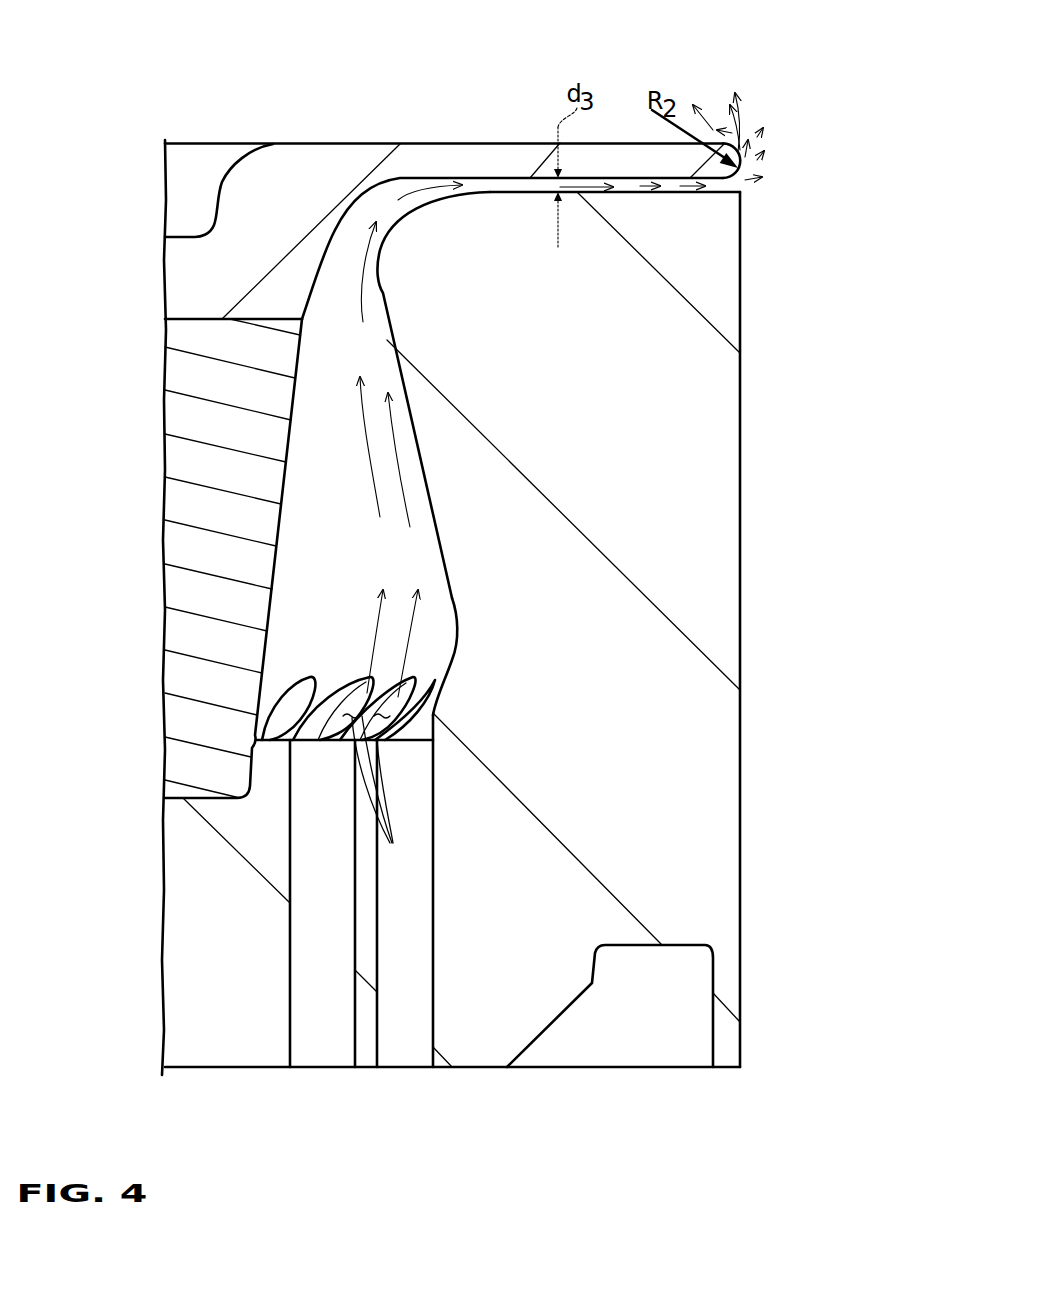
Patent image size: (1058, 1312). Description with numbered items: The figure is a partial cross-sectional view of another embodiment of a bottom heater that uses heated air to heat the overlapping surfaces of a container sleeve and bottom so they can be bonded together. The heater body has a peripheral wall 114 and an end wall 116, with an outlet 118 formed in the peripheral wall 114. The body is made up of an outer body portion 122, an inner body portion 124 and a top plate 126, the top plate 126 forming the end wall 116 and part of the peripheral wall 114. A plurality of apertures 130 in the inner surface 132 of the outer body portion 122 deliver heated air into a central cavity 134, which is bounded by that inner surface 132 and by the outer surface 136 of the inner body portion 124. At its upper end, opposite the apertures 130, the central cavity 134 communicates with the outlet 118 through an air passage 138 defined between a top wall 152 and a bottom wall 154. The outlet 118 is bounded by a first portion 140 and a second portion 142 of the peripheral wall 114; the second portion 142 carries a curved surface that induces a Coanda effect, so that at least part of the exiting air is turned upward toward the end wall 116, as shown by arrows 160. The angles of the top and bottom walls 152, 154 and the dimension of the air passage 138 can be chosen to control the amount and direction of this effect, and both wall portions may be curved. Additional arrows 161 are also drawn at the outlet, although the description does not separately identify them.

The peripheral wall 114 is at (740, 525).
The end wall 116 is at (418, 142).
The outlet 118 is at (700, 202).
The outer body portion 122 is at (698, 608).
The inner body portion 124 is at (197, 628).
The top plate 126 is at (510, 163).
The apertures 130 is at (317, 752).
The inner surface 132 is at (449, 618).
The central cavity 134 is at (318, 534).
The outer surface 136 is at (275, 582).
The air passage 138 is at (470, 186).
The first portion 140 is at (740, 403).
The second portion 142 is at (748, 150).
The top wall 152 is at (583, 177).
The bottom wall 154 is at (547, 192).
The arrows 160 is at (377, 473).
The tip vortex flow 161 is at (740, 110).